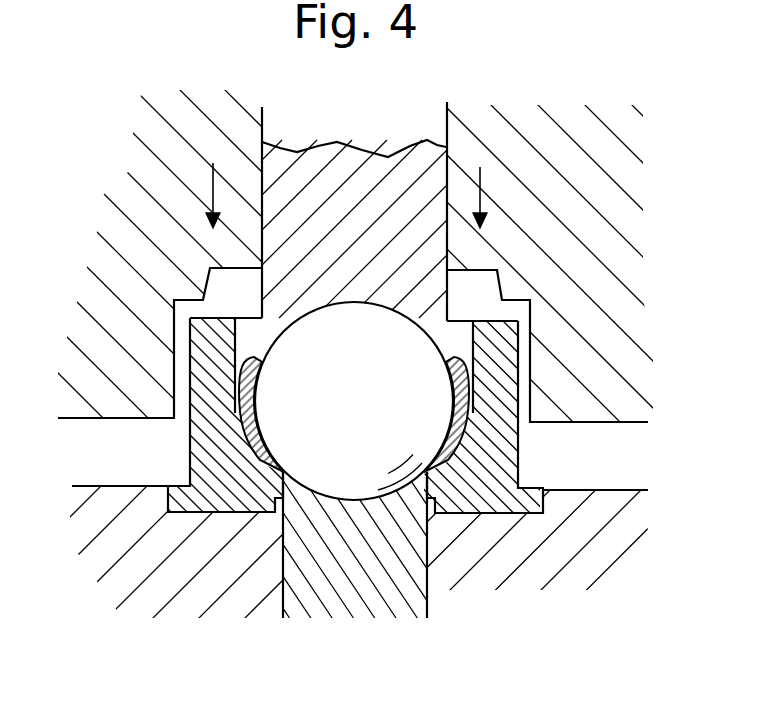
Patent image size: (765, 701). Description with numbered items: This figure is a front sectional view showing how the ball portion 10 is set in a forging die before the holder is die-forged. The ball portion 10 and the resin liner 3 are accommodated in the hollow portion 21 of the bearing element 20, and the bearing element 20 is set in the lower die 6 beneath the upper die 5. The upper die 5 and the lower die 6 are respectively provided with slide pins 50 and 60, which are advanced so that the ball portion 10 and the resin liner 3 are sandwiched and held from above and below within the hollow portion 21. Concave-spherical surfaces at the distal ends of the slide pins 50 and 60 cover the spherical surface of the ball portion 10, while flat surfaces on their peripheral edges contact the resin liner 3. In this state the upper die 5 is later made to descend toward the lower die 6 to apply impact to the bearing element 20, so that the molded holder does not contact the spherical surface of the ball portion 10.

The slide pin 50 is at (257, 286).
The upper die 5 is at (605, 423).
The lower die 6 is at (605, 489).
The bearing element 20 is at (222, 500).
The hollow portion 21 is at (473, 353).
The slide pin 60 is at (318, 565).
The ball portion 10 is at (363, 468).
The resin liner 3 is at (440, 472).